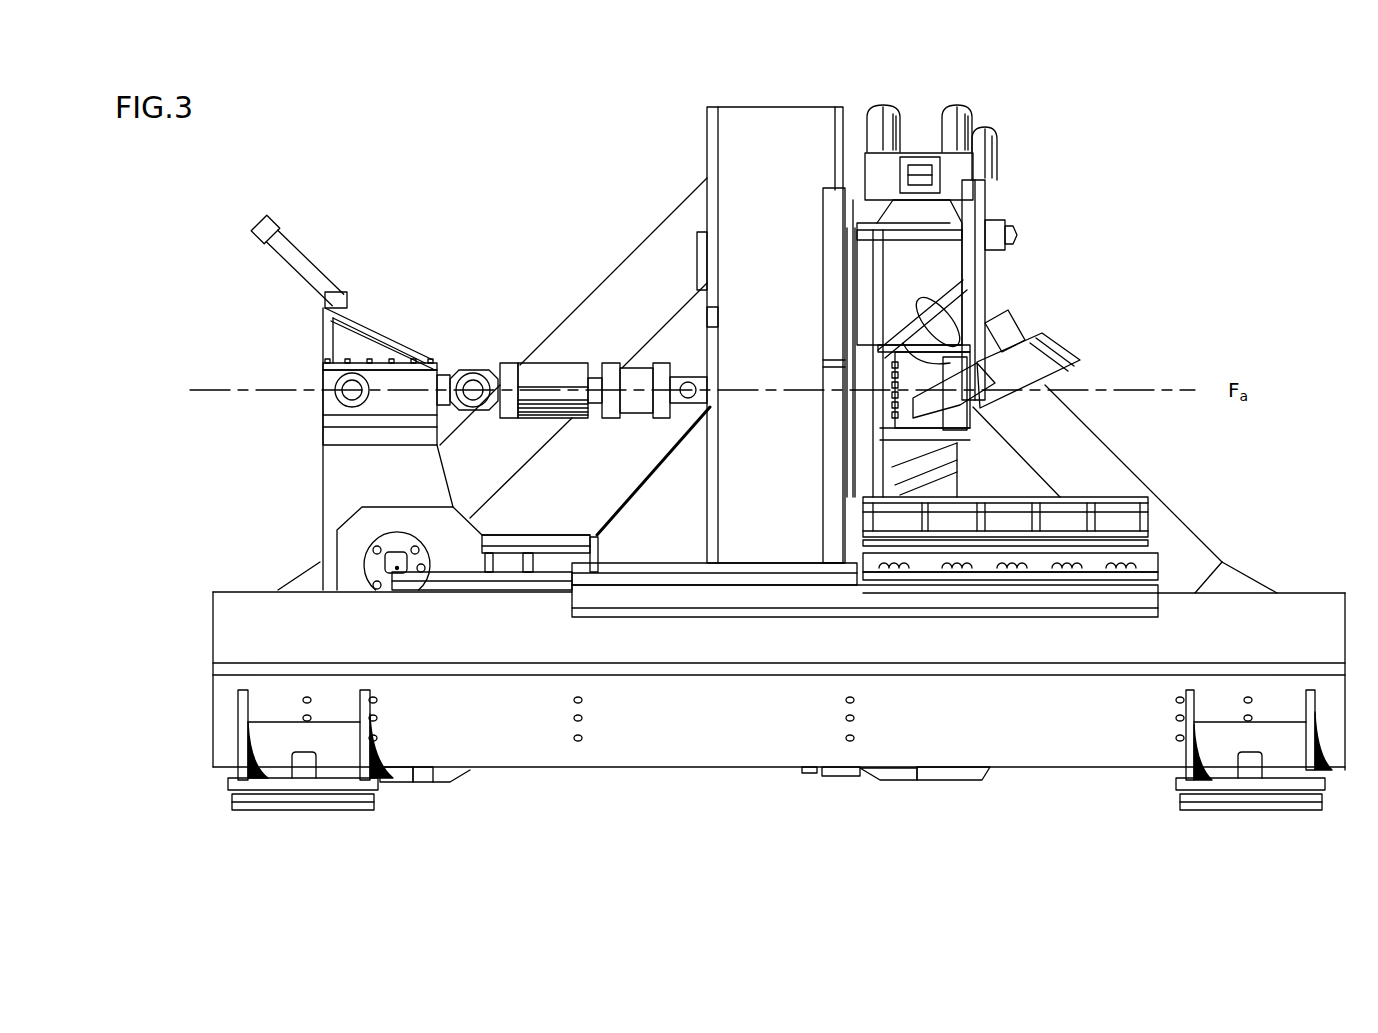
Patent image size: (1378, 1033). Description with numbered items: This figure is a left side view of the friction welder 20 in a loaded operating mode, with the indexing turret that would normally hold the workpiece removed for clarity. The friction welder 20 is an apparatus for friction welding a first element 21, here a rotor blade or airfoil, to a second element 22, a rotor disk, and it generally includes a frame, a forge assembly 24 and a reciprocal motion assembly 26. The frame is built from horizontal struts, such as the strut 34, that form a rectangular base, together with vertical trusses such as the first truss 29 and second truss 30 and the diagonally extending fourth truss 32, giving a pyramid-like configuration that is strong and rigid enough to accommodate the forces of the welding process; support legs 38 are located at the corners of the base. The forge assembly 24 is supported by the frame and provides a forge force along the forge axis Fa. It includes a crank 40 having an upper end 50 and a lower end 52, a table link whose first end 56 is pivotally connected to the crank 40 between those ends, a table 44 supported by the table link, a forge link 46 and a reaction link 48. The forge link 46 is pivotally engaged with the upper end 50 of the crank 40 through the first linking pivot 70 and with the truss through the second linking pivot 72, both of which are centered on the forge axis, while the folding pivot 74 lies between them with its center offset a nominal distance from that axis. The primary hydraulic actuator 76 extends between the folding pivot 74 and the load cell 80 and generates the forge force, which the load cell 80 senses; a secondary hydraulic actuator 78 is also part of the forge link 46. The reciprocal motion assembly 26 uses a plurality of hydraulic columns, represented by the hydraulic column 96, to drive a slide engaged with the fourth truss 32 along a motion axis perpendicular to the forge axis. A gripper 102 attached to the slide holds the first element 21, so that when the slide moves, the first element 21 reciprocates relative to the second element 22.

The friction welder 20 is at (1118, 272).
The first element 21 is at (1030, 382).
The second element 22 is at (1058, 345).
The forge assembly 24 is at (540, 424).
The reciprocal motion assembly 26 is at (990, 270).
The first truss 29 is at (660, 240).
The second truss 30 is at (1128, 480).
The fourth truss 32 is at (760, 239).
The strut 34 is at (460, 630).
The support legs 38 is at (240, 745).
The crank 40 is at (365, 489).
The table 44 is at (1153, 520).
The forge link 46 is at (553, 360).
The reaction link 48 is at (660, 773).
The upper end 50 is at (332, 405).
The lower end 52 is at (395, 780).
The first end 56 is at (348, 545).
The first linking pivot 70 is at (342, 385).
The second linking pivot 72 is at (703, 392).
The folding pivot 74 is at (470, 382).
The primary hydraulic actuator 76 is at (575, 368).
The secondary hydraulic actuator 78 is at (300, 247).
The load cell 80 is at (645, 410).
The hydraulic column 96 is at (985, 128).
The gripper 102 is at (928, 367).